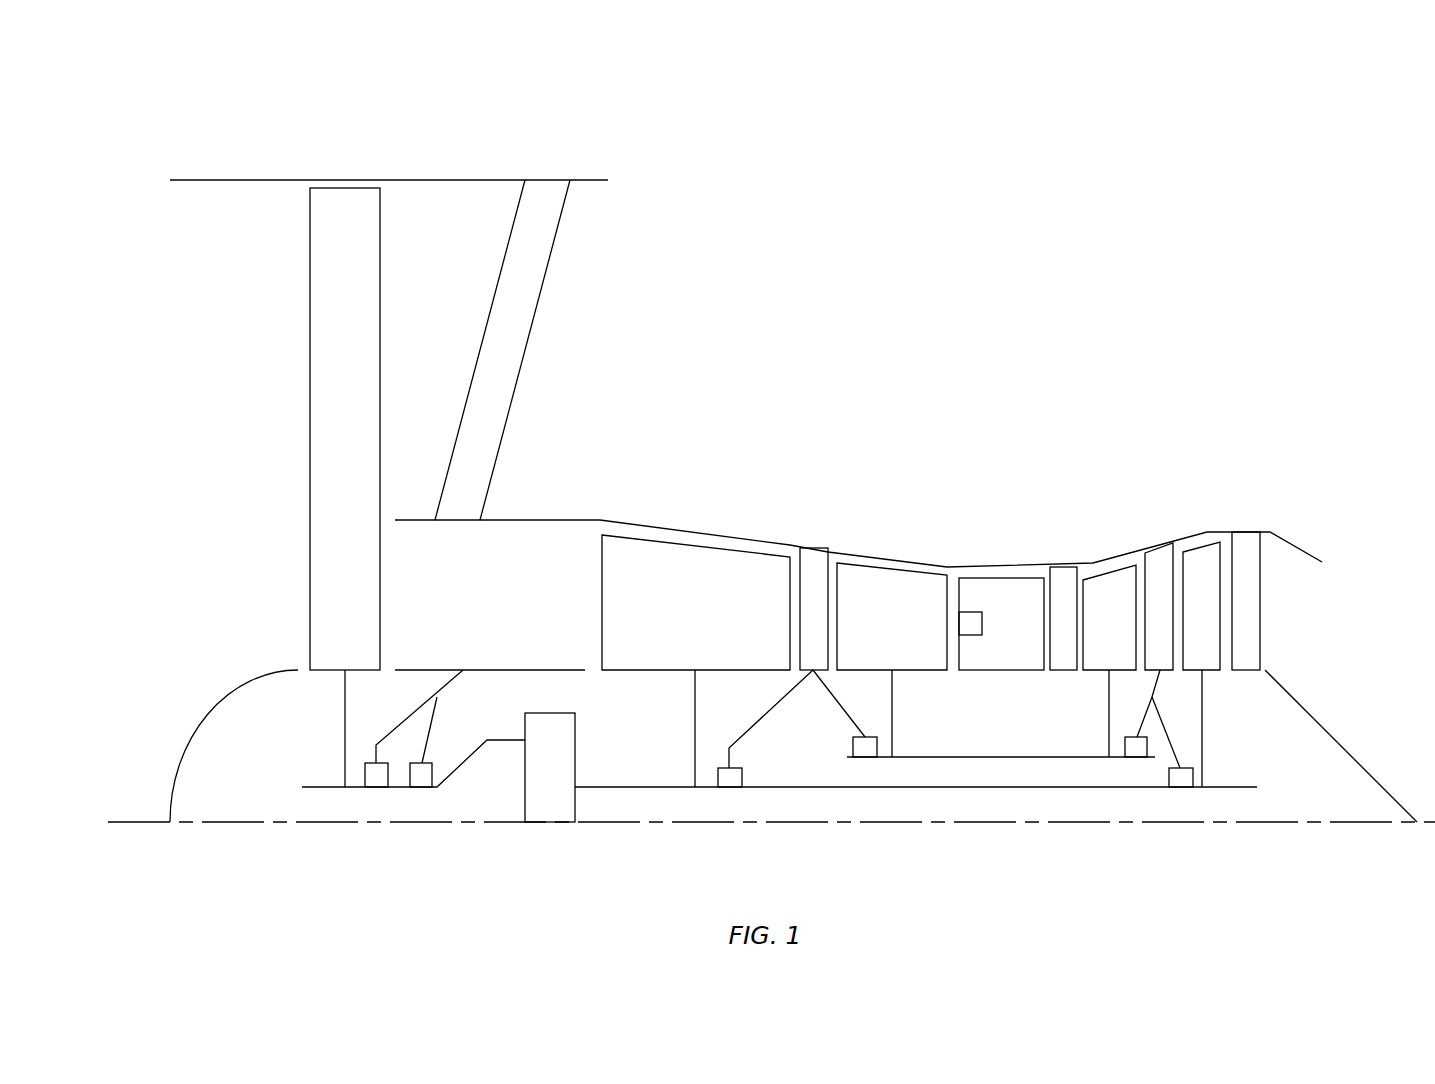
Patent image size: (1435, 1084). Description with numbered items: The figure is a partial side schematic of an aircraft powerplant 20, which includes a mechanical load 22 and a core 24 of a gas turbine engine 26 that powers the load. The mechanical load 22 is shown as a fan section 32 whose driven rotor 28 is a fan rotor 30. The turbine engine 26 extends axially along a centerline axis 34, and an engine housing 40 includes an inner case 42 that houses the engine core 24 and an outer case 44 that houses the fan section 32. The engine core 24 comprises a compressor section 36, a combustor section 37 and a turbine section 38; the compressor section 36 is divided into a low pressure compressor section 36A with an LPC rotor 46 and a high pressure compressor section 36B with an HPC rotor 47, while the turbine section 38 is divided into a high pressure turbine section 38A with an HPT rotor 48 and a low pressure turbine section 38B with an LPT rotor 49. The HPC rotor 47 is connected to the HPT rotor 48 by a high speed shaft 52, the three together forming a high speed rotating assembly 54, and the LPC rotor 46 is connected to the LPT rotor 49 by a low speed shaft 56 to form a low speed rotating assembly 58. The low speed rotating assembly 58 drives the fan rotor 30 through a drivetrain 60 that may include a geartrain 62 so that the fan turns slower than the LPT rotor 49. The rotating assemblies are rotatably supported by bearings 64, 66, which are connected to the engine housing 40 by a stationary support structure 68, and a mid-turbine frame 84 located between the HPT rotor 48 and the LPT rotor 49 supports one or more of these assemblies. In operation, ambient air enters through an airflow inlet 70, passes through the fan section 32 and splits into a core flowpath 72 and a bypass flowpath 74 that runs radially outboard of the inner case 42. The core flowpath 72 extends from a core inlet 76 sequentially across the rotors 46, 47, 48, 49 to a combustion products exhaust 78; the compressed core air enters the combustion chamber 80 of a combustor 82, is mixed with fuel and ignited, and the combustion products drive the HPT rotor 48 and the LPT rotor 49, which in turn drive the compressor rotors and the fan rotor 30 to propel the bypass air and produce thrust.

The powerplant 20 is at (352, 118).
The gas turbine engine 26 is at (186, 132).
The mechanical load 22 is at (328, 123).
The fan section 32 is at (347, 170).
The outer case 44 is at (590, 172).
The engine housing 40 is at (672, 192).
The airflow inlet 70 is at (170, 300).
The rotor 28 is at (277, 429).
The fan rotor 30 is at (305, 395).
The bypass flowpath 74 is at (425, 340).
The inner case 42 is at (555, 520).
The core flowpath 72 is at (472, 608).
The airflow inlet 76 is at (388, 614).
The low pressure compressor rotor 46 is at (682, 618).
The high pressure compressor rotor 47 is at (880, 631).
The combustion chamber 80 is at (999, 636).
The combustor 82 is at (1007, 578).
The high pressure turbine rotor 48 is at (1097, 633).
The low pressure turbine rotor 49 is at (1188, 620).
The mid-turbine frame 84 is at (1173, 577).
The combustion products exhaust 78 is at (1322, 612).
The core 24 is at (1007, 320).
The compressor section 36 is at (588, 362).
The low pressure compressor section 36A is at (588, 449).
The high pressure compressor section 36B is at (815, 449).
The combustor section 37 is at (955, 449).
The turbine section 38 is at (1232, 362).
The high pressure turbine section 38A is at (1080, 449).
The low pressure turbine section 38B is at (1232, 449).
The axis 34 is at (117, 826).
The geartrain 62 is at (536, 783).
The drivetrain 60 is at (546, 836).
The low speed shaft 56 is at (958, 788).
The high speed shaft 52 is at (920, 758).
The high speed rotating assembly 54 is at (978, 748).
The bearing 64 is at (1137, 758).
The bearing 66 is at (1180, 788).
The support structure 68 is at (1162, 720).
The low speed rotating assembly 58 is at (1230, 774).